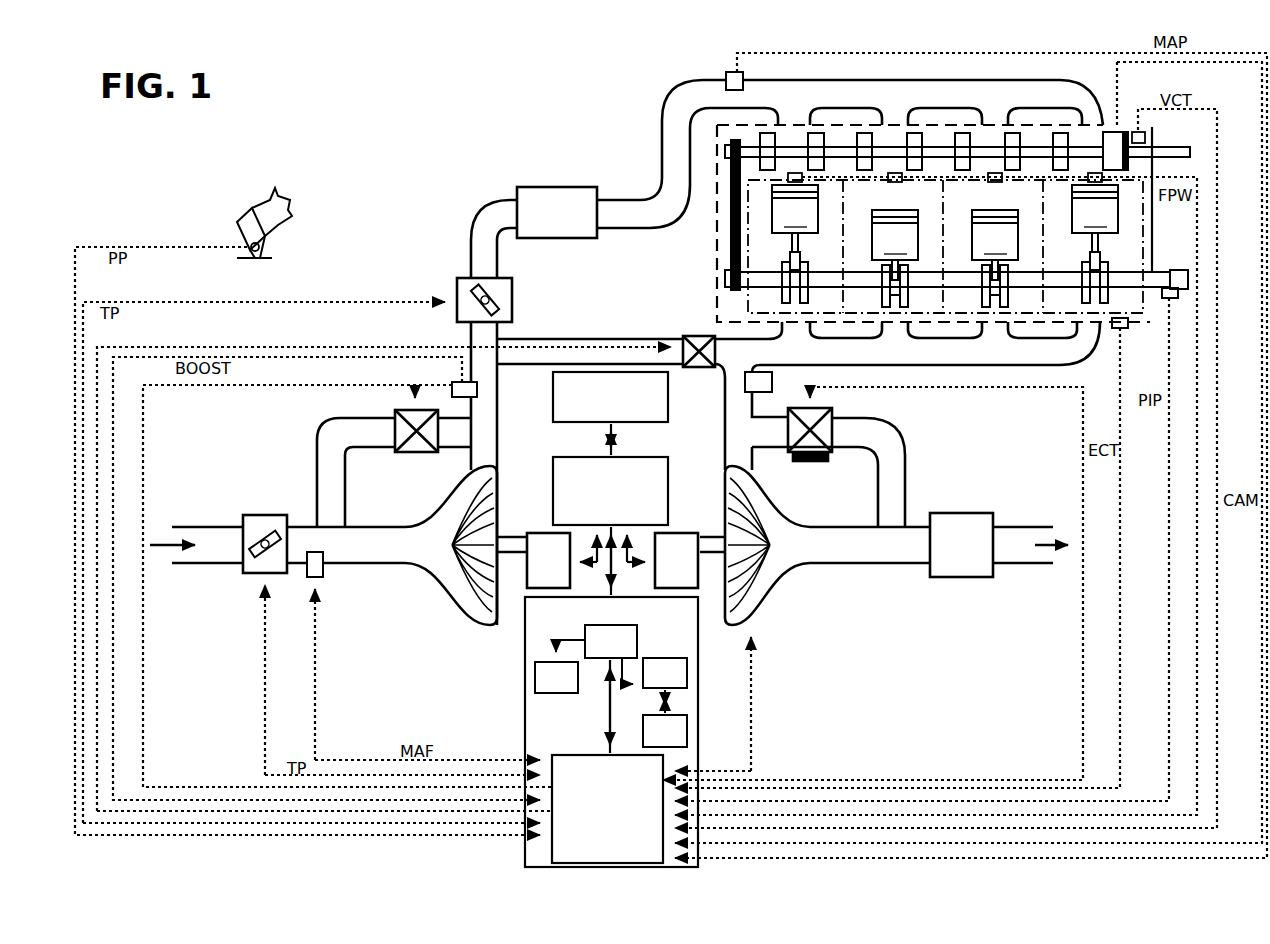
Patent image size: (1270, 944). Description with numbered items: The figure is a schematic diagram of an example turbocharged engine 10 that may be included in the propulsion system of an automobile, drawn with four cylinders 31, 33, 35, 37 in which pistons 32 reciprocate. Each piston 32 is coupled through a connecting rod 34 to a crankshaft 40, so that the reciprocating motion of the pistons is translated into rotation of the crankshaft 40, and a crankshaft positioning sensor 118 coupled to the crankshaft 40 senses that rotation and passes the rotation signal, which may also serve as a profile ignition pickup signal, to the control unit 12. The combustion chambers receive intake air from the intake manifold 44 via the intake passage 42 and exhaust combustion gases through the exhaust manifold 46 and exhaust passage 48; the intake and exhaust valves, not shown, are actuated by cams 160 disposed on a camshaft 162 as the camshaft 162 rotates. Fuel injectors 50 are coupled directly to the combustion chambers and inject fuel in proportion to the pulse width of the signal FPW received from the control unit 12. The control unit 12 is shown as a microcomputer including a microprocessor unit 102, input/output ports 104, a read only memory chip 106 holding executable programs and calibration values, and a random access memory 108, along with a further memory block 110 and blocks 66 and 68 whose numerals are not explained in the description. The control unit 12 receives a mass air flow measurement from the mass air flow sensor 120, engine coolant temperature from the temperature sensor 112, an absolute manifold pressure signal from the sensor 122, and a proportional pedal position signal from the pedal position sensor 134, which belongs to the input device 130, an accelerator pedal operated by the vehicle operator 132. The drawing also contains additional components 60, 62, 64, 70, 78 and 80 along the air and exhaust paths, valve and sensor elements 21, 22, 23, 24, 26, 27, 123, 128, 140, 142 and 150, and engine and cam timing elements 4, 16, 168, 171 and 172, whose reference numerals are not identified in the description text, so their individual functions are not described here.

The cylinder head 4 is at (691, 240).
The engine 10 is at (716, 262).
The control unit 12 is at (571, 732).
The cylinder block 16 is at (716, 206).
The throttle 21 is at (258, 515).
The throttle plate 22 is at (270, 530).
The throttle valve 23 is at (467, 278).
The throttle plate 24 is at (497, 314).
The wastegate valve 26 is at (832, 418).
The compressor bypass valve 27 is at (395, 418).
The cylinder 31 is at (778, 259).
The piston 32 is at (945, 222).
The cylinder 33 is at (940, 203).
The connecting rod 34 is at (872, 260).
The cylinder 35 is at (977, 203).
The cylinder 37 is at (1131, 259).
The crankshaft 40 is at (1157, 276).
The intake passage 42 is at (236, 557).
The intake manifold 44 is at (781, 107).
The exhaust manifold 46 is at (809, 354).
The exhaust passage 48 is at (886, 557).
The fuel injector 50 is at (890, 180).
The compressor 60 is at (460, 585).
The turbine 62 is at (765, 500).
The electric machine 64 is at (689, 570).
The battery 66 is at (553, 405).
The turbo driver 68 is at (640, 457).
The electric machine 70 is at (561, 570).
The emission control device 78 is at (974, 556).
The charge air cooler 80 is at (525, 187).
The microprocessor unit 102 is at (575, 637).
The input/output ports 104 is at (655, 826).
The read only memory chip 106 is at (535, 683).
The random access memory 108 is at (648, 658).
The keep alive memory 110 is at (643, 726).
The temperature sensor 112 is at (1120, 330).
The crankshaft positioning sensor 118 is at (1170, 300).
The mass air flow sensor 120 is at (323, 567).
The sensor 122 is at (727, 75).
The boost pressure sensor 123 is at (454, 383).
The exhaust gas sensor 128 is at (772, 385).
The input device 130 is at (240, 230).
The vehicle operator 132 is at (288, 212).
The pedal position sensor 134 is at (260, 248).
The EGR passage 140 is at (590, 339).
The EGR valve 142 is at (702, 336).
The wastegate actuator 150 is at (822, 460).
The cams 160 is at (930, 118).
The camshaft 162 is at (1180, 157).
The variable cam timing phaser 168 is at (1110, 120).
The phaser housing 171 is at (1117, 122).
The cam position sensor 172 is at (1146, 138).